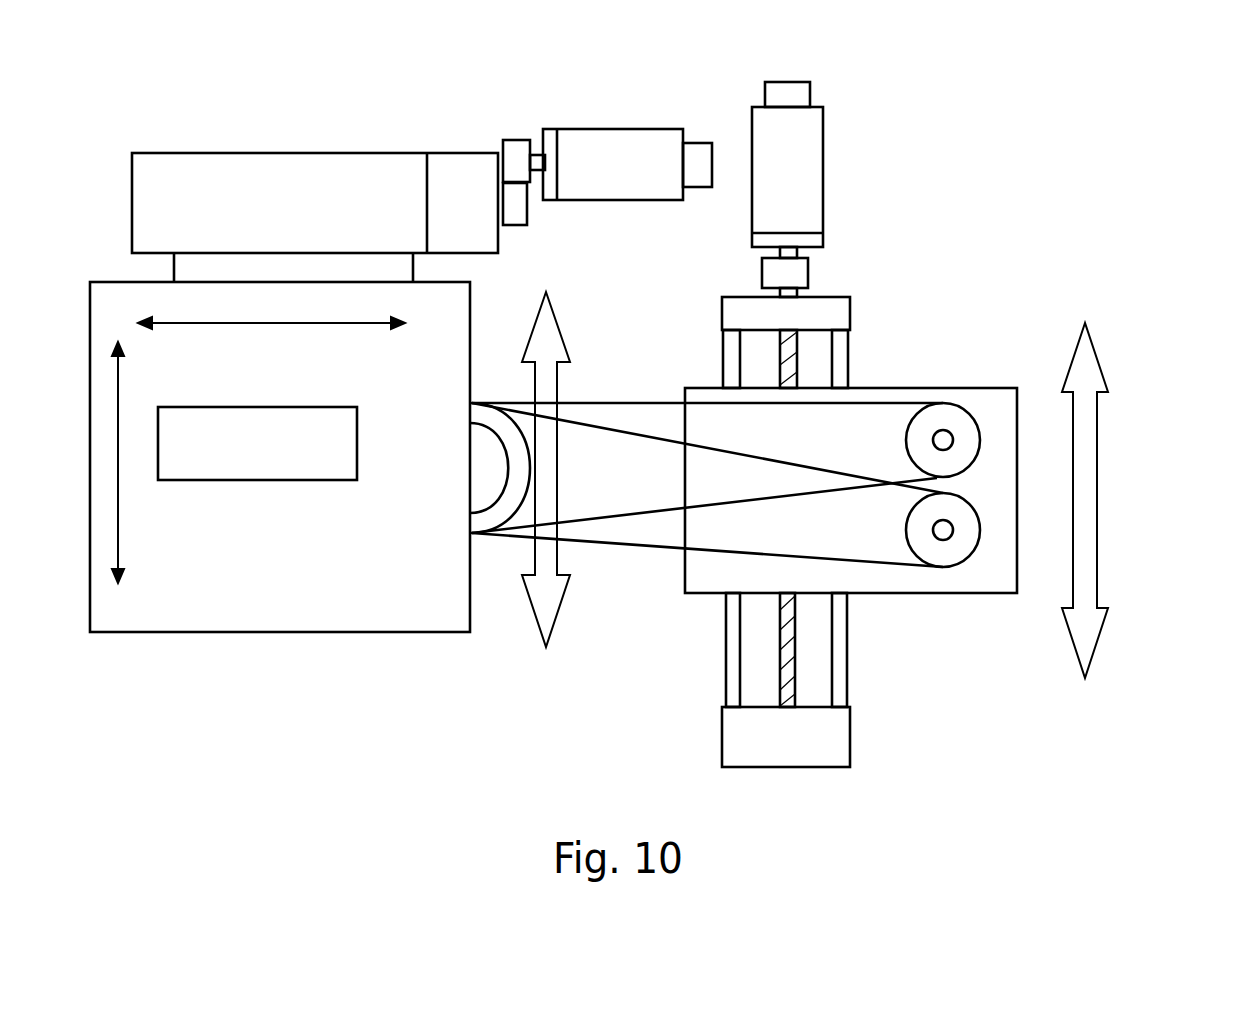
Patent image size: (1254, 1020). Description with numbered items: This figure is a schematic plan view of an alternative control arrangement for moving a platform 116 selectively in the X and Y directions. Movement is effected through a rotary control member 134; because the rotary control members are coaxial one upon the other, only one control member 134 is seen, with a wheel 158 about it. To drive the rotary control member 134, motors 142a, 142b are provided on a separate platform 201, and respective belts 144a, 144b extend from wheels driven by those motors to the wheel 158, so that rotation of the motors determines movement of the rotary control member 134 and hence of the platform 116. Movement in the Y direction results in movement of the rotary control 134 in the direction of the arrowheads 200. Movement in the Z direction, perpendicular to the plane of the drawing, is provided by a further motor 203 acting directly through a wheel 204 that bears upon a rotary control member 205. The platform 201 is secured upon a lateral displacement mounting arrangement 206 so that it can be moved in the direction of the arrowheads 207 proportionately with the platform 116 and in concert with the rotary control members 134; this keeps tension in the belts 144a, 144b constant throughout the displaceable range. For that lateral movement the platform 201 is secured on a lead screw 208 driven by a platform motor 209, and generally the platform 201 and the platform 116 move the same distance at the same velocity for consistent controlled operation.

The platform 116 is at (175, 598).
The rotary control member 134 is at (478, 488).
The wheel 158 is at (488, 518).
The motor 142a is at (957, 415).
The motor 142b is at (955, 555).
The belt 144a is at (645, 510).
The belt 144b is at (640, 550).
The arrowheads 200 is at (566, 346).
The platform 201 is at (880, 583).
The further motor 203 is at (610, 130).
The wheel 204 is at (513, 148).
The rotary control member 205 is at (518, 215).
The lateral displacement mounting arrangement 206 is at (878, 228).
The arrowheads 207 is at (1088, 505).
The lead screw 208 is at (785, 375).
The platform motor 209 is at (823, 153).